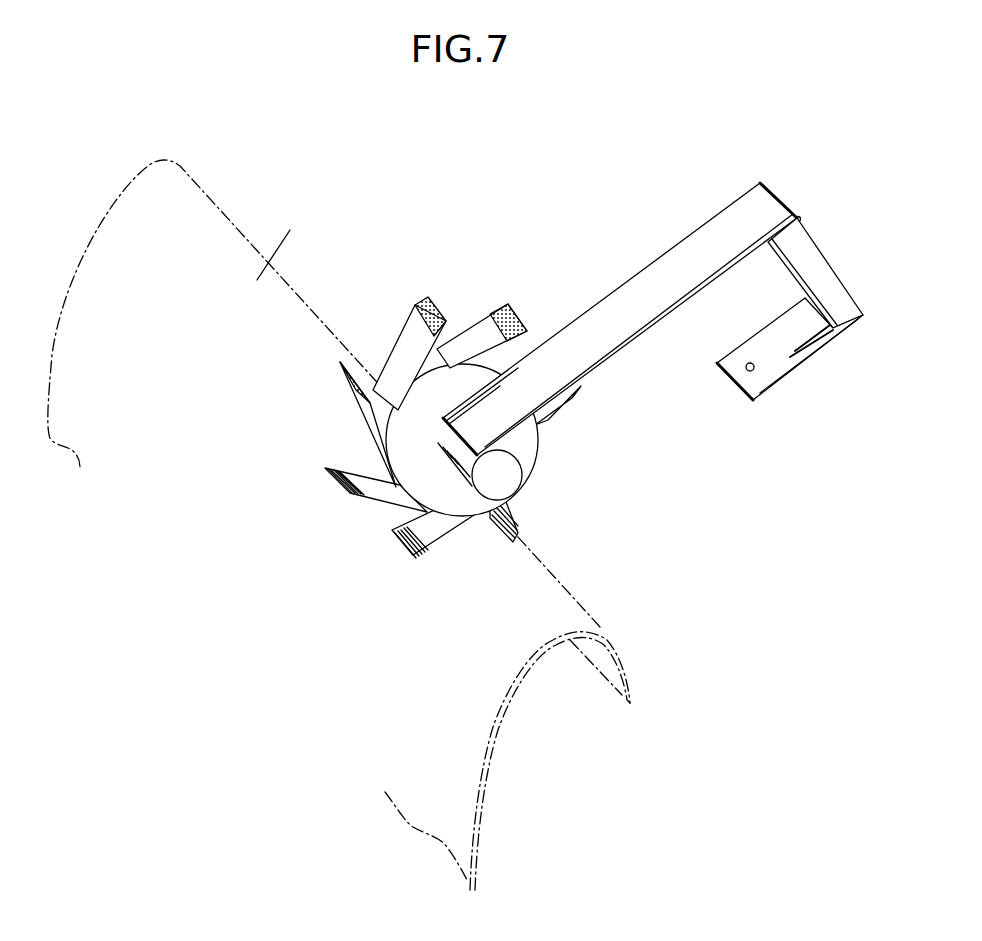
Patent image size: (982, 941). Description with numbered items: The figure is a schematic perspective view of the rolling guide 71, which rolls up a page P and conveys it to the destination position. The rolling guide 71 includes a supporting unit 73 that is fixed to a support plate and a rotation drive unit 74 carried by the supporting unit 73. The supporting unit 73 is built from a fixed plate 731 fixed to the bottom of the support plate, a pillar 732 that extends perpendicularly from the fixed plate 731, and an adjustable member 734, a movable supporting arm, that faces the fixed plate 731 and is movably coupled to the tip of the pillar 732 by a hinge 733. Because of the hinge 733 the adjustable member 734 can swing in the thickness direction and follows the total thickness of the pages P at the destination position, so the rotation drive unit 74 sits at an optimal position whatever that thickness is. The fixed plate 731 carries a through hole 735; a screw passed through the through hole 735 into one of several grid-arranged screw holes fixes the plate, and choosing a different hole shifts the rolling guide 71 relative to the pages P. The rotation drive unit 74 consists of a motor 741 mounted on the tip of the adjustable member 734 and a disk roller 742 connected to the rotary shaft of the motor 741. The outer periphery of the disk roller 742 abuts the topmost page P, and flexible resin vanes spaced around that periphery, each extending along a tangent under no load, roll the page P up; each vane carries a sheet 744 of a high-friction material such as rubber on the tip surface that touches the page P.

The rolling guide 71 is at (602, 148).
The supporting unit 73 is at (742, 182).
The fixed plate 731 is at (810, 358).
The pillar 732 is at (829, 270).
The hinge 733 is at (800, 214).
The adjustable member 734 is at (690, 242).
The through hole 735 is at (752, 372).
The rotation drive unit 74 is at (392, 325).
The motor 741 is at (492, 483).
The disk roller 742 is at (443, 493).
The sheet 744 is at (423, 310).
The page P is at (339, 525).